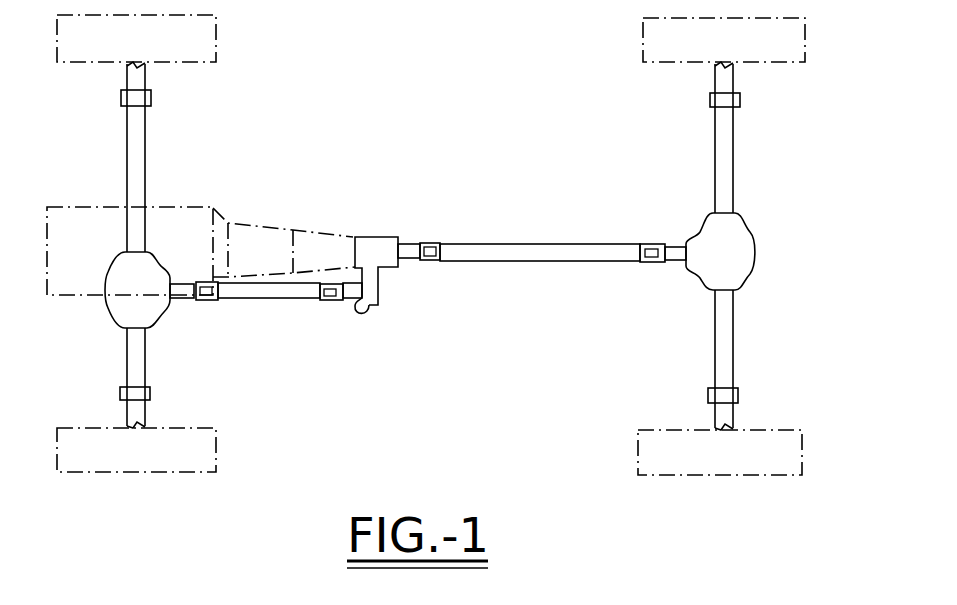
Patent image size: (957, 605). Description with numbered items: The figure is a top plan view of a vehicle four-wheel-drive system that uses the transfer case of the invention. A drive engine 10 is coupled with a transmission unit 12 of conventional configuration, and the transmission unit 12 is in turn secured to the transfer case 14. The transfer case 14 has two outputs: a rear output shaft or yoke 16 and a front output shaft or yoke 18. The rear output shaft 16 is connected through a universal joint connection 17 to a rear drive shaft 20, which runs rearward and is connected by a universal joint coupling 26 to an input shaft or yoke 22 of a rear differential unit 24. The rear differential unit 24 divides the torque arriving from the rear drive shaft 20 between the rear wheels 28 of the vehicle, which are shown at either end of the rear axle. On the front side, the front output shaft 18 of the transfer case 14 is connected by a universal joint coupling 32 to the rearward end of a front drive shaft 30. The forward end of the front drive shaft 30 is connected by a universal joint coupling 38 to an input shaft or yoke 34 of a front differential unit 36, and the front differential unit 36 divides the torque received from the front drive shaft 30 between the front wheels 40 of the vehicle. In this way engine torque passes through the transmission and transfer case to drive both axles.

The drive engine 10 is at (84, 202).
The transmission unit 12 is at (277, 222).
The transfer case 14 is at (378, 228).
The rear output shaft 16 is at (411, 243).
The universal joint 17 is at (432, 261).
The front output shaft 18 is at (350, 299).
The rear drive shaft 20 is at (527, 243).
The input shaft 22 is at (655, 244).
The rear differential unit 24 is at (750, 242).
The universal joint coupling 26 is at (650, 263).
The rear wheels 28 is at (643, 33).
The front drive shaft 30 is at (245, 299).
The universal joint coupling 32 is at (343, 301).
The input shaft 34 is at (183, 299).
The front differential unit 36 is at (122, 312).
The universal joint coupling 38 is at (211, 300).
The front wheels 40 is at (216, 32).